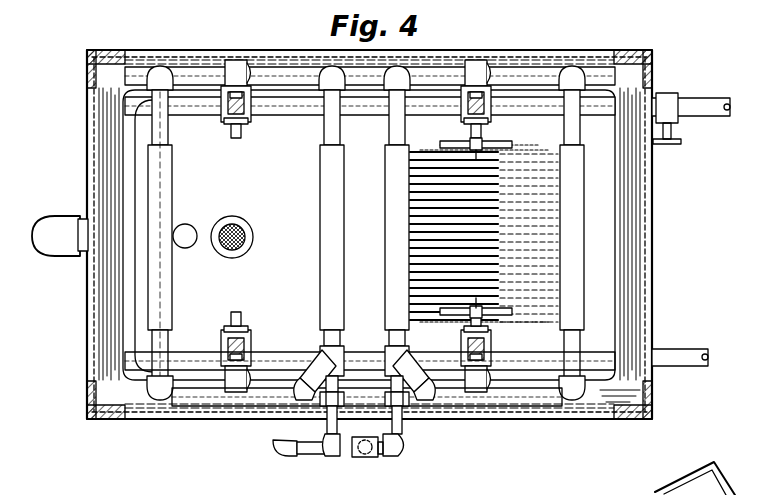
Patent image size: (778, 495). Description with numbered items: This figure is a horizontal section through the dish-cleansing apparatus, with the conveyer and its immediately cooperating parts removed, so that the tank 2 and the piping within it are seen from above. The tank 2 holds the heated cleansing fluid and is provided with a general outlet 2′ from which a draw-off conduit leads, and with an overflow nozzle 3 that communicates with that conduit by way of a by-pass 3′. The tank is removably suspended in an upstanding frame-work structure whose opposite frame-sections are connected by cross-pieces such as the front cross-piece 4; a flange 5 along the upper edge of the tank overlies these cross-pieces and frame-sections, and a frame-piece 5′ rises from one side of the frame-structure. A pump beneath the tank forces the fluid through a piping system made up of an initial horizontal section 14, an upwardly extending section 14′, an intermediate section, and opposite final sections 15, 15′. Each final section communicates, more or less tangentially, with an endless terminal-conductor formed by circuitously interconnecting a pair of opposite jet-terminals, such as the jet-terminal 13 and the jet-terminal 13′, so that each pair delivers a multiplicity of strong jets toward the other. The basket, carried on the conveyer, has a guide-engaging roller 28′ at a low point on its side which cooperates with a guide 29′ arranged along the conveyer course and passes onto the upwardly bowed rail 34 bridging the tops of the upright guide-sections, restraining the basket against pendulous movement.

The tank 2 is at (640, 245).
The general outlet 2′ is at (232, 216).
The overflow nozzle 3 is at (84, 218).
The by-pass 3′ is at (33, 238).
The front cross-piece 4 is at (105, 138).
The flange 5 is at (128, 170).
The frame-piece 5′ is at (112, 420).
The vertical pipe 13 is at (385, 170).
The jet-terminal 13′ is at (172, 190).
The initial horizontal section 14 is at (285, 440).
The upwardly extending section 14′ is at (360, 458).
The final section 15 is at (342, 384).
The final section 15′ is at (436, 384).
The guide-engaging roller 28′ is at (486, 330).
The guide 29′ is at (491, 356).
The rail 34 is at (90, 356).